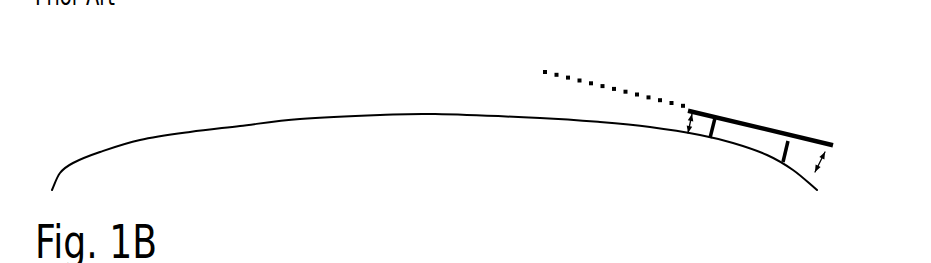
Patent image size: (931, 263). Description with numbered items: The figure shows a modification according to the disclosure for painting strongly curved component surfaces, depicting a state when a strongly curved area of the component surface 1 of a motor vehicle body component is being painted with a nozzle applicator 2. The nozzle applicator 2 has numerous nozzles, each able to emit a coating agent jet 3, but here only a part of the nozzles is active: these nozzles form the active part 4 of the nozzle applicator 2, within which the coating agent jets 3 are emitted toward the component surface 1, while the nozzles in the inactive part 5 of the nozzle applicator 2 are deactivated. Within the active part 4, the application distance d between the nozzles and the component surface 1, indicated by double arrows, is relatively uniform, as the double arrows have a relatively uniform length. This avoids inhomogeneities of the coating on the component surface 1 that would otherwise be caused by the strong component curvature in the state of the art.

The component surface 1 is at (315, 117).
The nozzle applicator 2 is at (760, 96).
The coating agent jets 3 is at (782, 148).
The active part 4 is at (831, 131).
The inactive part 5 is at (684, 97).
The application distance d is at (825, 163).